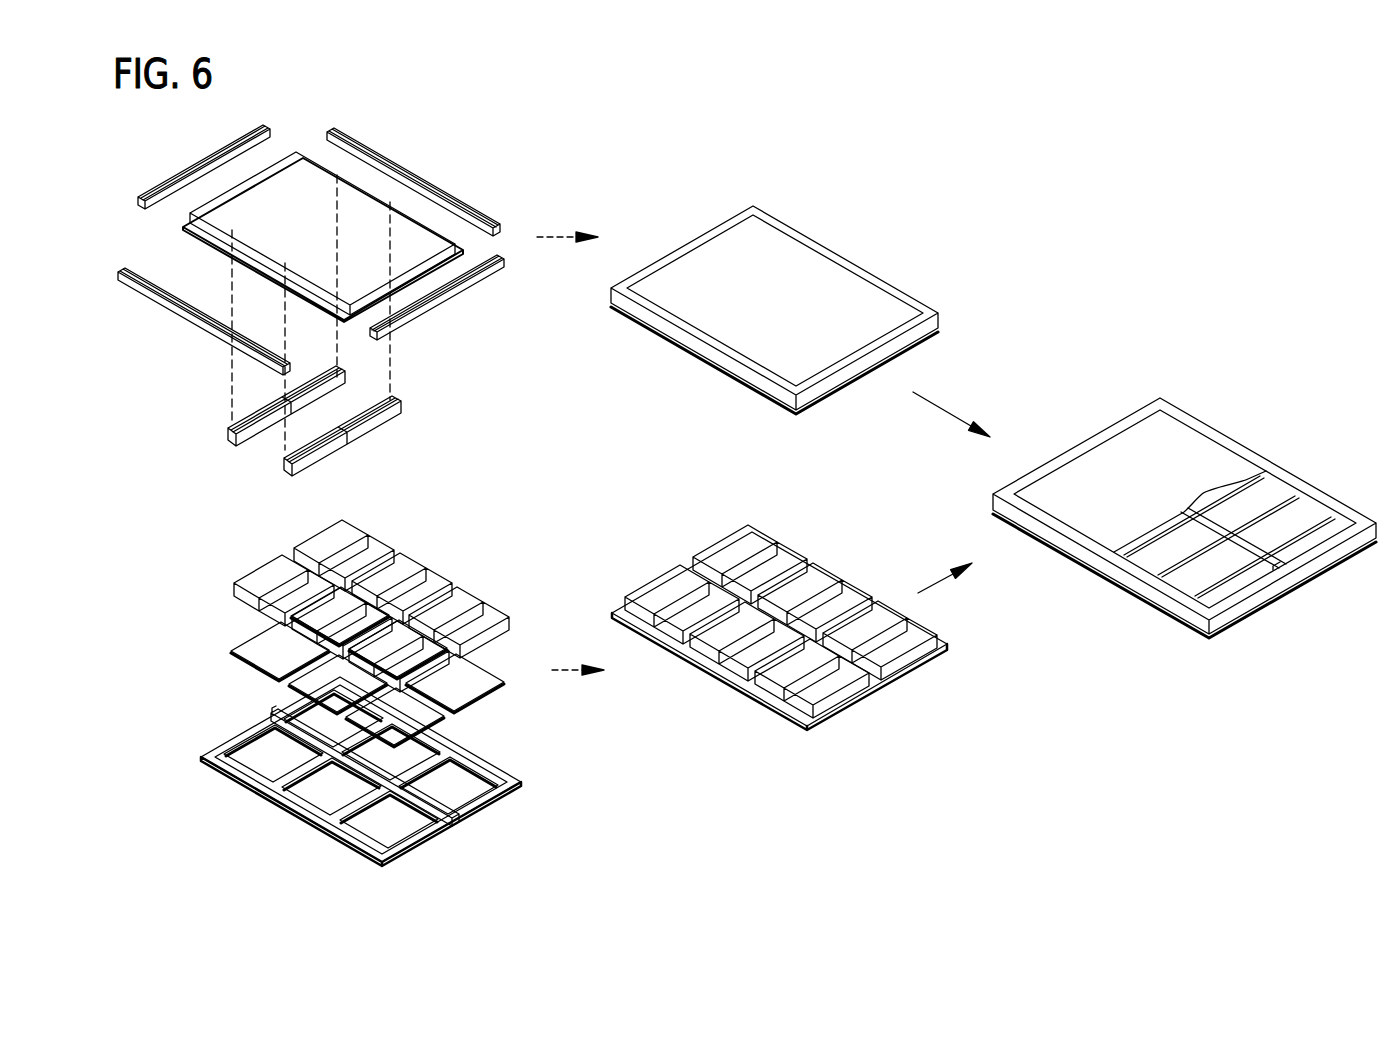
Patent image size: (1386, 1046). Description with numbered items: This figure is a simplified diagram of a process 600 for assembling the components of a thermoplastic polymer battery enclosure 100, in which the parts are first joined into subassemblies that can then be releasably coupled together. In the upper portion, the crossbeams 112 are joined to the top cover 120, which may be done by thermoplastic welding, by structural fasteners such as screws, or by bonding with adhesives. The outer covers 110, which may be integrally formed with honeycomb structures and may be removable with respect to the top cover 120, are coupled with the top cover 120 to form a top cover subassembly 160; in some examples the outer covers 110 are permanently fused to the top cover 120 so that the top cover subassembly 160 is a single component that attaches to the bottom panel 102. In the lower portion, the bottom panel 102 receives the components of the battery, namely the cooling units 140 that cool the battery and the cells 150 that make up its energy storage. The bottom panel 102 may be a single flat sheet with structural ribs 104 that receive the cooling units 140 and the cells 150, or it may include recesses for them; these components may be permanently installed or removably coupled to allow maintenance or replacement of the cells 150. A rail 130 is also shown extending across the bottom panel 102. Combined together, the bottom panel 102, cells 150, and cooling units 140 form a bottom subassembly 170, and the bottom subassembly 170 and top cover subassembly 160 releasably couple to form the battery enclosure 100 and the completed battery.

The battery enclosure 100 is at (1230, 394).
The bottom panel 102 is at (242, 782).
The structural ribs 104 is at (300, 807).
The outer covers 110 is at (198, 165).
The crossbeams 112 is at (245, 433).
The top cover 120 is at (433, 237).
The center rail 130 is at (447, 803).
The cooling units 140 is at (482, 683).
The cells 150 is at (482, 610).
The top cover subassembly 160 is at (832, 204).
The bottom subassembly 170 is at (824, 532).
The process 600 is at (982, 189).